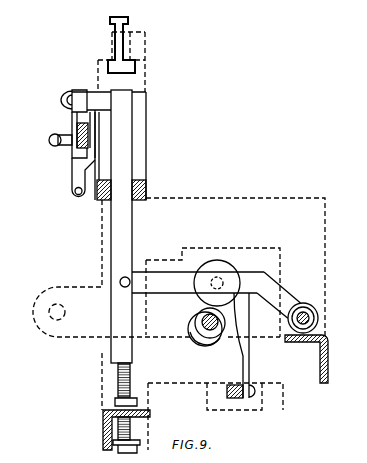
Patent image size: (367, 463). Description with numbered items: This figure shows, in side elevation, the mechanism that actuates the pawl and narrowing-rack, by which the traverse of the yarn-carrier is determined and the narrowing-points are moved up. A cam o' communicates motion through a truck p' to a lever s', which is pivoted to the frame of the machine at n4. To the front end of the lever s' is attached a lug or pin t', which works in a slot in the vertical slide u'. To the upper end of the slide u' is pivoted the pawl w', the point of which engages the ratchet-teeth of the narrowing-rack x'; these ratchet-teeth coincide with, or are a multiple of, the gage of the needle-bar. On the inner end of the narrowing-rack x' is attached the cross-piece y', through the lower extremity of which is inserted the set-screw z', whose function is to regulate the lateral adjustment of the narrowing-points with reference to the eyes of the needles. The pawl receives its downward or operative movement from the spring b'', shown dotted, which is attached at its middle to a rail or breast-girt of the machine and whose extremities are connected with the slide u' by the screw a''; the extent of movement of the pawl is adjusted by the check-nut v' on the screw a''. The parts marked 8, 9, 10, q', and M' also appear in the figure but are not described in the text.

The pawl w' is at (86, 93).
The narrowing-rack x' is at (72, 135).
The cross-piece y' is at (76, 177).
The set-screw z' is at (76, 204).
The vertical slide u' is at (121, 226).
The lug or pin t' is at (192, 282).
The truck p' is at (214, 281).
The lever s' is at (287, 302).
The pivot n4 is at (321, 320).
The wheel 8 is at (204, 319).
The cam o' is at (203, 335).
The ring 9 is at (205, 348).
The hub 10 is at (221, 327).
The follower rod q' is at (249, 345).
The block M' is at (225, 392).
The screw a'' is at (132, 380).
The check-nut v' is at (120, 401).
The spring b'' is at (134, 445).